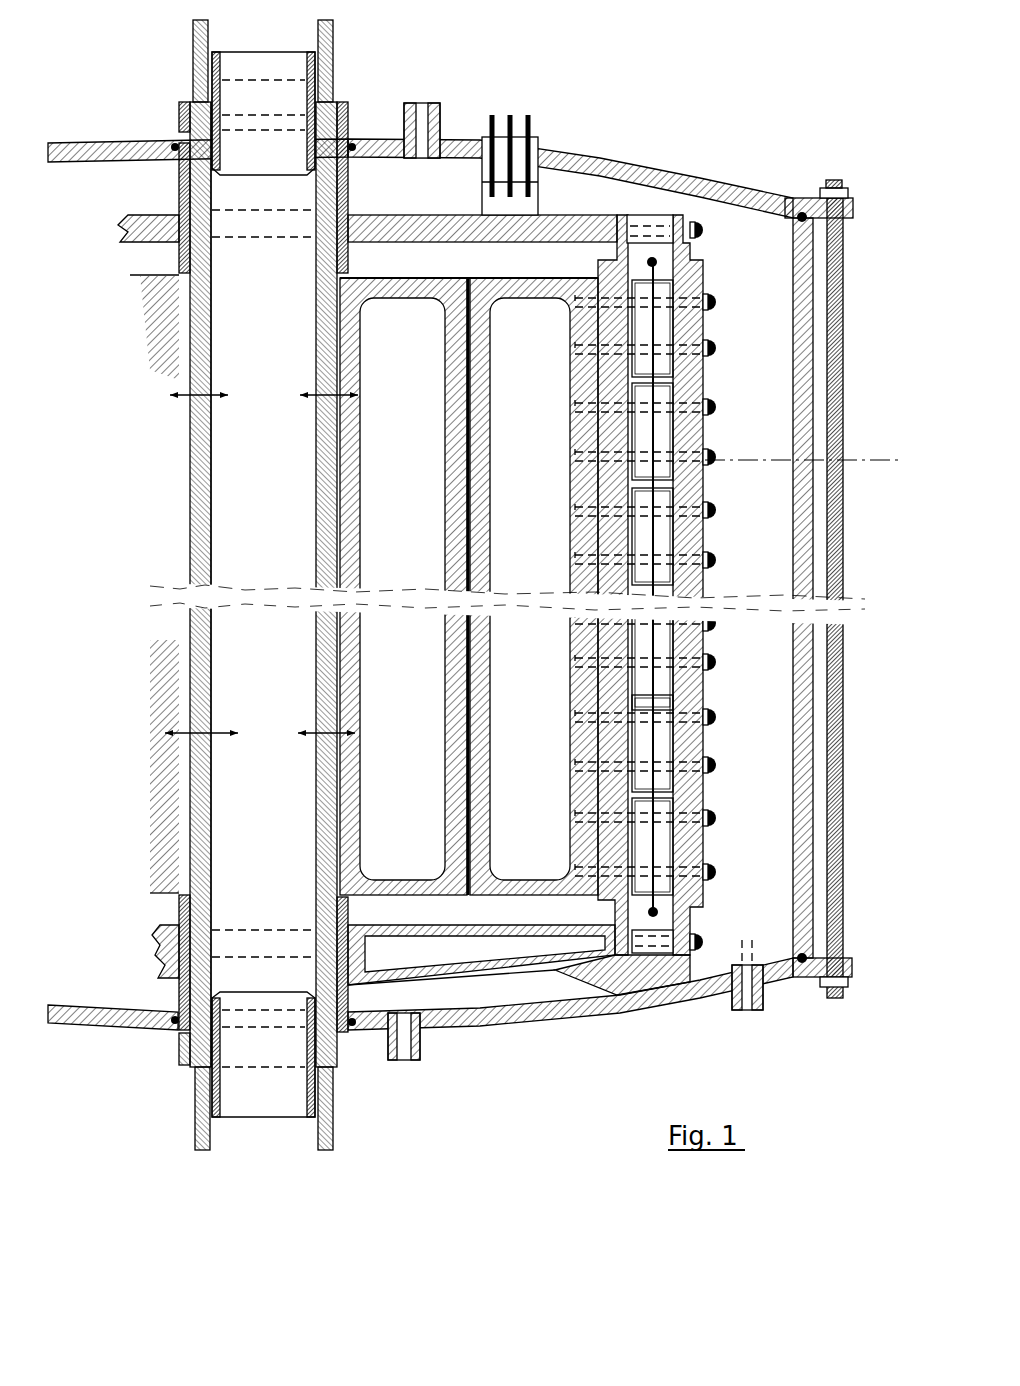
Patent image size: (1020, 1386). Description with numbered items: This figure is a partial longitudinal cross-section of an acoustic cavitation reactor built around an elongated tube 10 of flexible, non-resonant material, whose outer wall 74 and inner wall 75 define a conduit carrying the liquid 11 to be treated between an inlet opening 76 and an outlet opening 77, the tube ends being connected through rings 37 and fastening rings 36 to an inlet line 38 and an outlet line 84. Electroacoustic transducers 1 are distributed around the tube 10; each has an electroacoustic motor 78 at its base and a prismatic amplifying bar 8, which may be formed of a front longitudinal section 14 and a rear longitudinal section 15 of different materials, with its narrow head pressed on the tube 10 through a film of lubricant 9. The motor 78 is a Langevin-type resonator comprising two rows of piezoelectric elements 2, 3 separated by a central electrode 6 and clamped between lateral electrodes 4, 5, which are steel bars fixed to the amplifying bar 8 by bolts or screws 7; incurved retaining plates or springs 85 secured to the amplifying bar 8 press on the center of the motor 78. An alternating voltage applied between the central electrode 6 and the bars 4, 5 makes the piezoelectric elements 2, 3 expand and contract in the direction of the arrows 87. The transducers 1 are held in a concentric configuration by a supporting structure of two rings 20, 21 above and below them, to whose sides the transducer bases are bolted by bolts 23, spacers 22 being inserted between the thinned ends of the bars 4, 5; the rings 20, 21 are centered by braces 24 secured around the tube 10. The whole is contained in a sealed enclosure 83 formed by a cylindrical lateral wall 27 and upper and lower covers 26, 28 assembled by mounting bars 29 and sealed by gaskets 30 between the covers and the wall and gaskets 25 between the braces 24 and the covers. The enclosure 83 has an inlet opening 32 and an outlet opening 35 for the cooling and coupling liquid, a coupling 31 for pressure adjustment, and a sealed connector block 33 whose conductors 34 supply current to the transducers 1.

The electroacoustic transducer 1 is at (656, 577).
The piezoelectric elements 2 is at (670, 392).
The piezoelectric elements 3 is at (645, 512).
The lateral electrode 4 is at (705, 688).
The lateral electrode 5 is at (598, 690).
The central electrode 6 is at (647, 262).
The bolts or screws 7 is at (722, 515).
The amplifying bar 8 is at (475, 272).
The film of lubricant 9 is at (335, 322).
The tube 10 is at (188, 512).
The liquid 11 is at (277, 535).
The front longitudinal section 14 is at (414, 535).
The rear longitudinal section 15 is at (542, 535).
The ring 20 is at (445, 215).
The ring 21 is at (442, 960).
The spacer 22 is at (652, 220).
The bolt 23 is at (705, 230).
The brace 24 is at (178, 200).
The gasket 25 is at (355, 138).
The upper cover 26 is at (630, 165).
The cylindrical lateral wall 27 is at (758, 464).
The lower cover 28 is at (690, 1012).
The mounting bar 29 is at (845, 512).
The gasket 30 is at (805, 215).
The opening or coupling 31 is at (442, 118).
The inlet opening 32 is at (752, 1015).
The sealed connector block 33 is at (538, 140).
The conductors 34 is at (492, 115).
The outlet opening 35 is at (423, 1045).
The fastening ring 36 is at (178, 118).
The ring 37 is at (230, 52).
The inlet line 38 is at (195, 1148).
The outer wall 74 is at (182, 478).
The inner wall 75 is at (210, 325).
The inlet opening 76 is at (190, 1069).
The outlet opening 77 is at (345, 100).
The electroacoustic motor 78 is at (665, 268).
The enclosure 83 is at (600, 158).
The outlet line 84 is at (195, 72).
The retaining plate or spring 85 is at (715, 763).
The direction arrows 87 is at (305, 732).